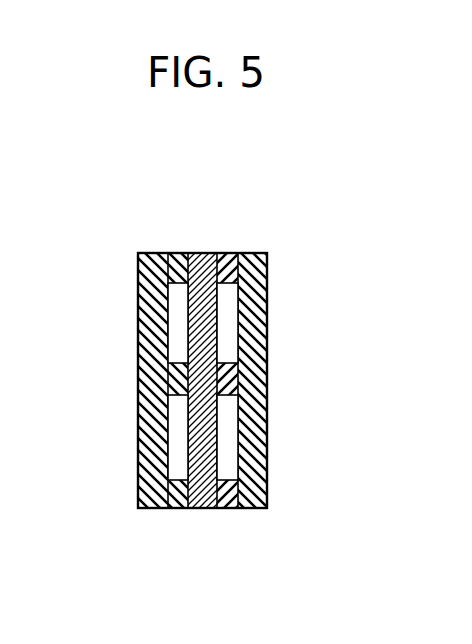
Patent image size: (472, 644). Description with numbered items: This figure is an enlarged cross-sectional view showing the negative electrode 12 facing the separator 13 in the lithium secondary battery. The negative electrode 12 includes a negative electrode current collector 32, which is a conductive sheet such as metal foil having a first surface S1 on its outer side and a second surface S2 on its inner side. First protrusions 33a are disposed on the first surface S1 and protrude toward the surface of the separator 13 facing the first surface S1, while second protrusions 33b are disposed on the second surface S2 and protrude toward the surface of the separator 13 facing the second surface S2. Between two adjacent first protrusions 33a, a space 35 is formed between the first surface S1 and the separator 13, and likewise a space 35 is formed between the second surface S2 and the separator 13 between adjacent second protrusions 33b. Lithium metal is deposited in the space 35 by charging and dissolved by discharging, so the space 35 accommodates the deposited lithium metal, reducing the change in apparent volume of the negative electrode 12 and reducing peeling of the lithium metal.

The negative electrode 12 is at (237, 512).
The separator 13 is at (152, 511).
The negative electrode current collector 32 is at (202, 253).
The first protrusions 33a is at (227, 253).
The second protrusions 33b is at (172, 253).
The space 35 is at (175, 355).
The first surface S1 is at (219, 337).
The second surface S2 is at (186, 320).